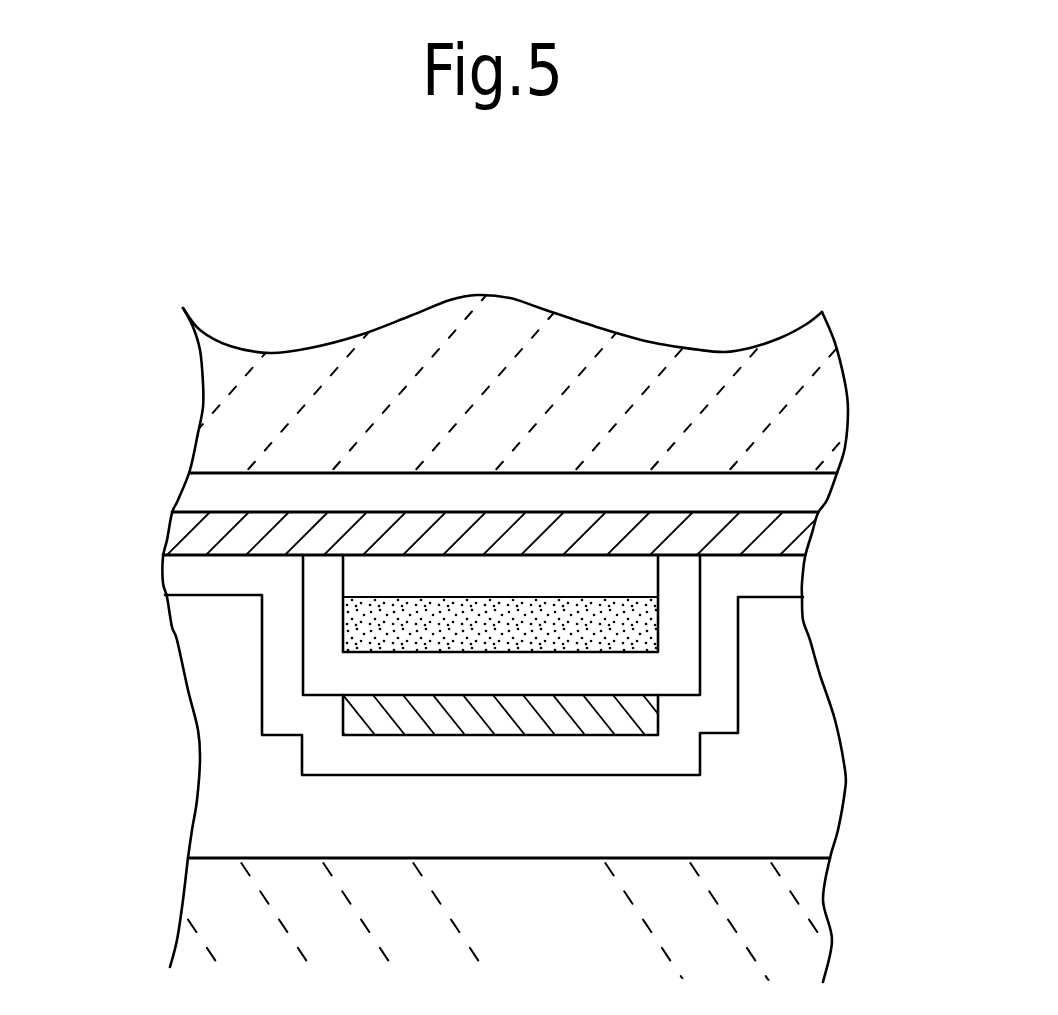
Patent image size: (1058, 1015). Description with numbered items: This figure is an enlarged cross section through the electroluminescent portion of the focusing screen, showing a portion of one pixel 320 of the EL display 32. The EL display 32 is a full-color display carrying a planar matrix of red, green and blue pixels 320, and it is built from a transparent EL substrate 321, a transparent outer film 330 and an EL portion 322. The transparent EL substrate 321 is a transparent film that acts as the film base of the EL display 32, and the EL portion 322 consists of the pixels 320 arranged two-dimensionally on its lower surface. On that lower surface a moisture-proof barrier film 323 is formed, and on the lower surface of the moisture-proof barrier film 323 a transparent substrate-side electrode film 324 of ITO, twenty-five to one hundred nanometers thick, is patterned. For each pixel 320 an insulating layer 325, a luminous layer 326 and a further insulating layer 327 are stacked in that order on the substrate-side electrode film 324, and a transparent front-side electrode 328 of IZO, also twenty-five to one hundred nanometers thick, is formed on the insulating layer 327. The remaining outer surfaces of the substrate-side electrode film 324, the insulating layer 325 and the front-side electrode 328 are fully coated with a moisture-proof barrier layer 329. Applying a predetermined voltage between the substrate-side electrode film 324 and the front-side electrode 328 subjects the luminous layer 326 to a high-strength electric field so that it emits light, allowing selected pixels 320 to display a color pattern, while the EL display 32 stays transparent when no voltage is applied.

The EL display 32 is at (698, 340).
The pixel 320 is at (298, 775).
The transparent EL substrate 321 is at (822, 430).
The EL portion 322 is at (95, 632).
The moisture-proof barrier film 323 is at (803, 497).
The substrate-side electrode film 324 is at (783, 543).
The insulating layer 325 is at (627, 578).
The luminous layer 326 is at (622, 630).
The insulating layer 327 is at (660, 678).
The front-side electrode 328 is at (630, 720).
The moisture-proof barrier layer 329 is at (595, 758).
The transparent outer film 330 is at (515, 994).